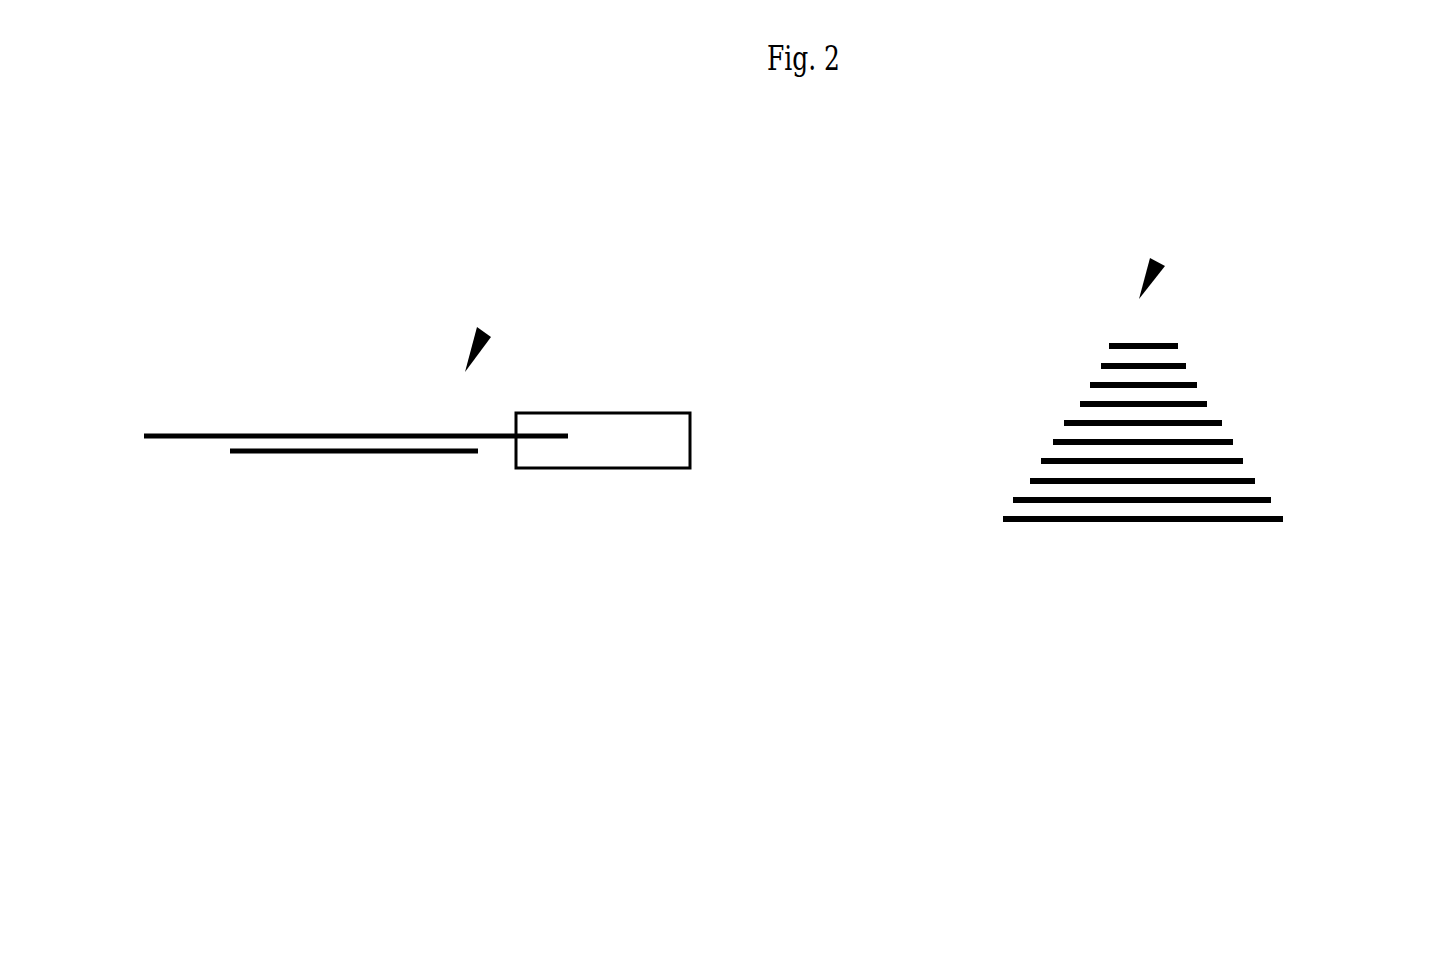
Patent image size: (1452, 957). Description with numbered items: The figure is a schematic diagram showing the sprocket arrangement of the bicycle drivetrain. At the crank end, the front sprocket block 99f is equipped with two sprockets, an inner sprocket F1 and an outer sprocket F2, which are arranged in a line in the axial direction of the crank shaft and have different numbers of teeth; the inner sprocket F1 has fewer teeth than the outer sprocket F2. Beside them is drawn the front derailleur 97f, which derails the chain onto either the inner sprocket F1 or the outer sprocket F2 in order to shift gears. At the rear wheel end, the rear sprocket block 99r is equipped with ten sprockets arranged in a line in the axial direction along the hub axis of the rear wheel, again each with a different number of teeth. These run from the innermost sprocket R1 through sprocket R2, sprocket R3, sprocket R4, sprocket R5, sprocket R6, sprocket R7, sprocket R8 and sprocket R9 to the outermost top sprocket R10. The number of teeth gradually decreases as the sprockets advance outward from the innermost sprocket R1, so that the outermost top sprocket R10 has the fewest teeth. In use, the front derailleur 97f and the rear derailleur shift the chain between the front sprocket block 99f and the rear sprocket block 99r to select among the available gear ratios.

The inner sprocket F1 is at (307, 455).
The outer sprocket F2 is at (288, 432).
The front derailleur 97f is at (593, 413).
The front sprocket block 99f is at (483, 330).
The rear sprocket block 99r is at (1157, 258).
The innermost sprocket R1 is at (1003, 520).
The sprocket R2 is at (1013, 500).
The sprocket R3 is at (1030, 482).
The sprocket R4 is at (1040, 458).
The sprocket R5 is at (1053, 439).
The sprocket R6 is at (1222, 423).
The sprocket R7 is at (1207, 404).
The sprocket R8 is at (1197, 385).
The sprocket R9 is at (1185, 363).
The outermost top sprocket R10 is at (1172, 343).